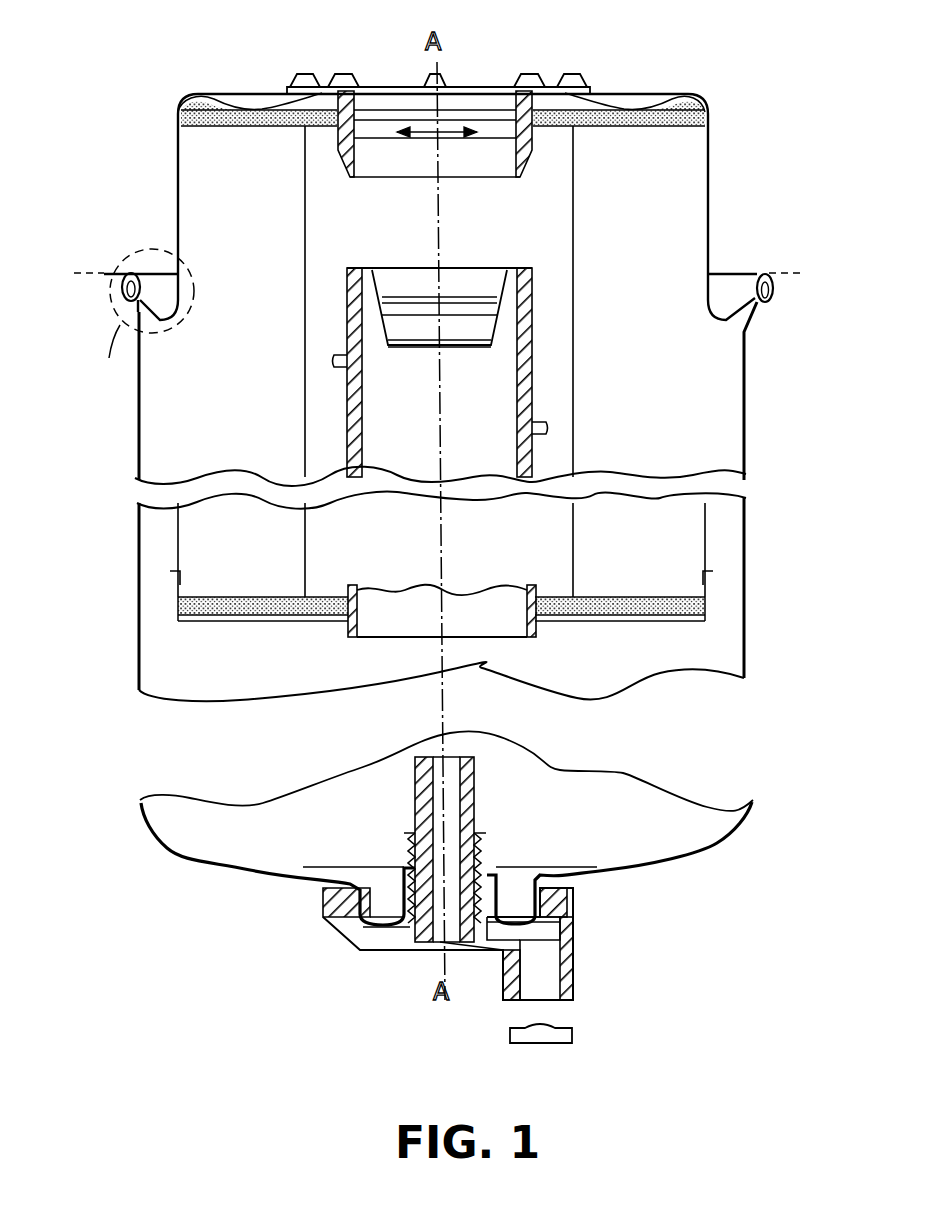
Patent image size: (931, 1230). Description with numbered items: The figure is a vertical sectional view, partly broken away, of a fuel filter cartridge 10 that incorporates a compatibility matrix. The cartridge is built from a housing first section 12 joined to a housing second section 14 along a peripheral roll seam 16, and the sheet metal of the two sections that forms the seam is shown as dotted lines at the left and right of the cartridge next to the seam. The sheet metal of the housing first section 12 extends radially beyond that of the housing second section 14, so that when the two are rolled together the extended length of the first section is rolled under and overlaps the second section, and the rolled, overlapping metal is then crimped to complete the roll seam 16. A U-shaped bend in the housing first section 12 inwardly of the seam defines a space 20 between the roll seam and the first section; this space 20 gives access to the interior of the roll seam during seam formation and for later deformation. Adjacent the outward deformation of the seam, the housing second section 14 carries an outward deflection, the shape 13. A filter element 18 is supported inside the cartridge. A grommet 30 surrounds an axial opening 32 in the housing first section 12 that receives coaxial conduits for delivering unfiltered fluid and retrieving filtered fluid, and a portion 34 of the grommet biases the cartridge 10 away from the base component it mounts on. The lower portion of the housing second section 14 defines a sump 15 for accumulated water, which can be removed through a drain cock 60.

The filter cartridge 10 is at (210, 58).
The housing first section 12 is at (708, 152).
The shape 13 is at (752, 342).
The housing second section 14 is at (750, 614).
The sump 15 is at (552, 845).
The roll seam 16 is at (764, 304).
The filter element 18 is at (210, 543).
The space 20 is at (153, 272).
The grommet 30 is at (536, 76).
The axial opening 32 is at (422, 118).
The cartridge grommet portion 34 is at (296, 88).
The drain cock 60 is at (352, 940).